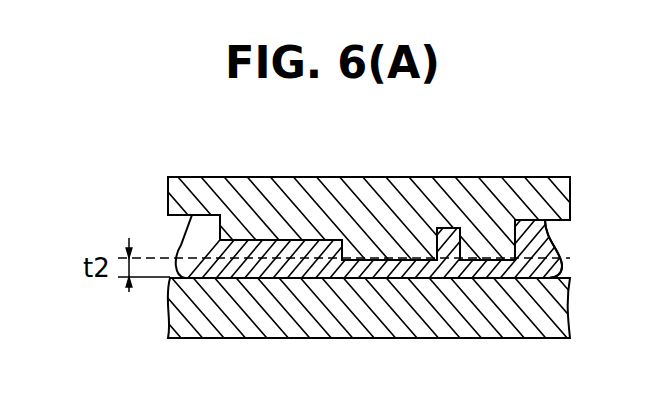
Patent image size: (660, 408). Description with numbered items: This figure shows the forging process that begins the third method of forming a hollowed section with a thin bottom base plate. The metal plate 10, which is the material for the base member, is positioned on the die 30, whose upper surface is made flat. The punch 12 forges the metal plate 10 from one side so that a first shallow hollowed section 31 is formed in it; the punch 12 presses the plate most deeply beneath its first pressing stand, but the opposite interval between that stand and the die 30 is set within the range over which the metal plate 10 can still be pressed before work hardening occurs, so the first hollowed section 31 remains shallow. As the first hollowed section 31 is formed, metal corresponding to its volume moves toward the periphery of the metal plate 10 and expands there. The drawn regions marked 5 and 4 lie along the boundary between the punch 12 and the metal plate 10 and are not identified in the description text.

The upper plate 12 is at (172, 190).
The intermediate layer 10 is at (185, 230).
The lower plate 30 is at (170, 312).
The raised portion 5 is at (283, 253).
The projection 4 is at (487, 243).
The end portion 31 is at (505, 236).